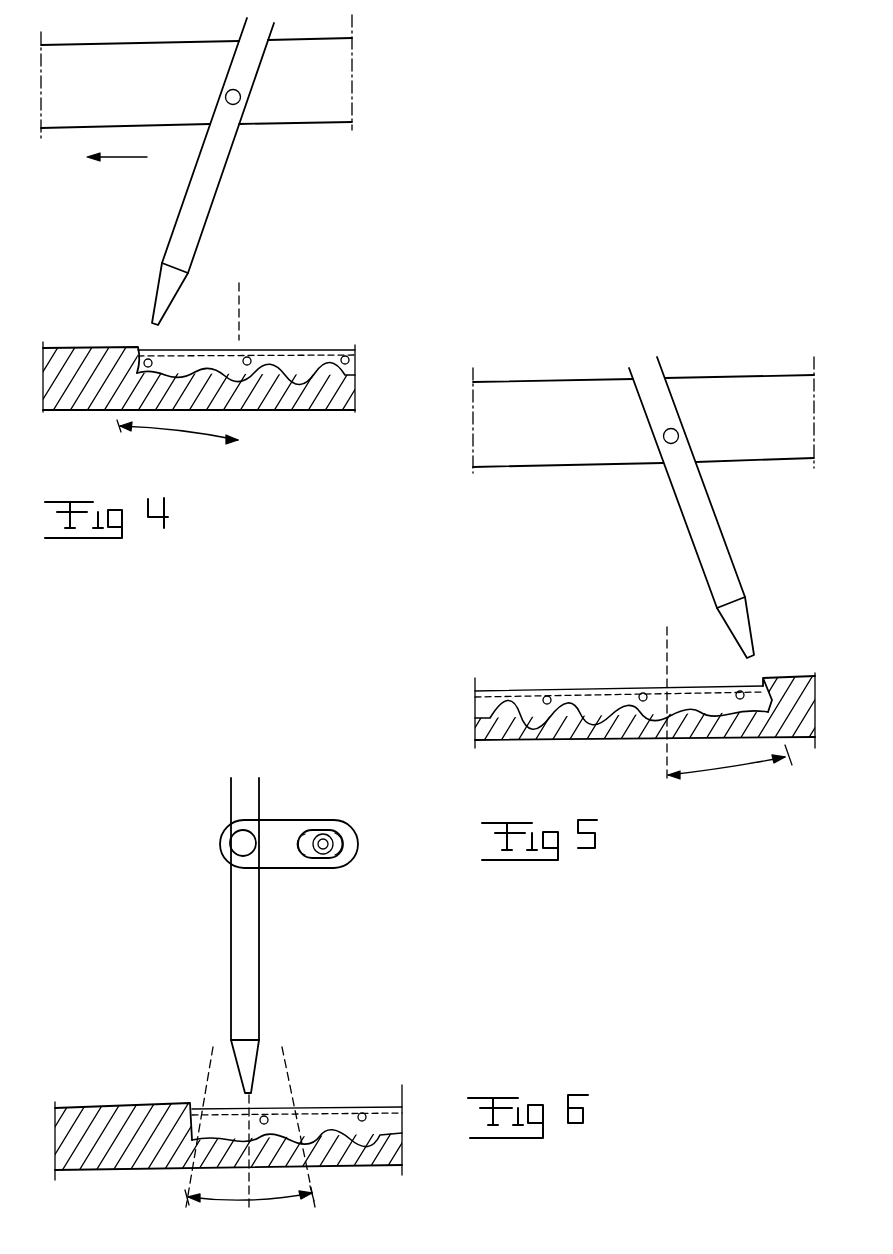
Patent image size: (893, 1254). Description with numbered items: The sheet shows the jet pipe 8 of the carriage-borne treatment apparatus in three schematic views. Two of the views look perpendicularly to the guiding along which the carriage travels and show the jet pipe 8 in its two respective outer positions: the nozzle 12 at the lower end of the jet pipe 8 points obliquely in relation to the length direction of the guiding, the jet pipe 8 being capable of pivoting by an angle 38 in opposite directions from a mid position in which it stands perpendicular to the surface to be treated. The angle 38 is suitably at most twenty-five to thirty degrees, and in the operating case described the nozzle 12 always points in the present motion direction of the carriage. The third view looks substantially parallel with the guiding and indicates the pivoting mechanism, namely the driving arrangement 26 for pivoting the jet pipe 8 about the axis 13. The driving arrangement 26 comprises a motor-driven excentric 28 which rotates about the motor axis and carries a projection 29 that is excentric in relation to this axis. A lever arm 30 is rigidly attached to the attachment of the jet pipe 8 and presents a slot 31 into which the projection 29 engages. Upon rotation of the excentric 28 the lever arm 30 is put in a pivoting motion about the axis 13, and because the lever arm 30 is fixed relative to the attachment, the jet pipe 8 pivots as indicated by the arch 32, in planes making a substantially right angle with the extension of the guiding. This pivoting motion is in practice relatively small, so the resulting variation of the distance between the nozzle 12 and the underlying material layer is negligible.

In FIG. 4, the jet pipe 8 is at (203, 192).
In FIG. 5, the jet pipe 8 is at (697, 522).
In FIG. 6, the jet pipe 8 is at (250, 980).
In FIG. 4, the nozzle 12 is at (158, 307).
In FIG. 5, the nozzle 12 is at (747, 643).
In FIG. 6, the axis 13 is at (243, 845).
In FIG. 6, the driving arrangement 26 is at (324, 758).
In FIG. 6, the excentric 28 is at (323, 848).
In FIG. 6, the projection 29 is at (305, 828).
In FIG. 6, the lever arm 30 is at (283, 830).
In FIG. 6, the slot 31 is at (340, 851).
In FIG. 6, the arch 32 is at (270, 1192).
In FIG. 4, the angle 38 is at (190, 428).
In FIG. 5, the angle 38 is at (724, 762).